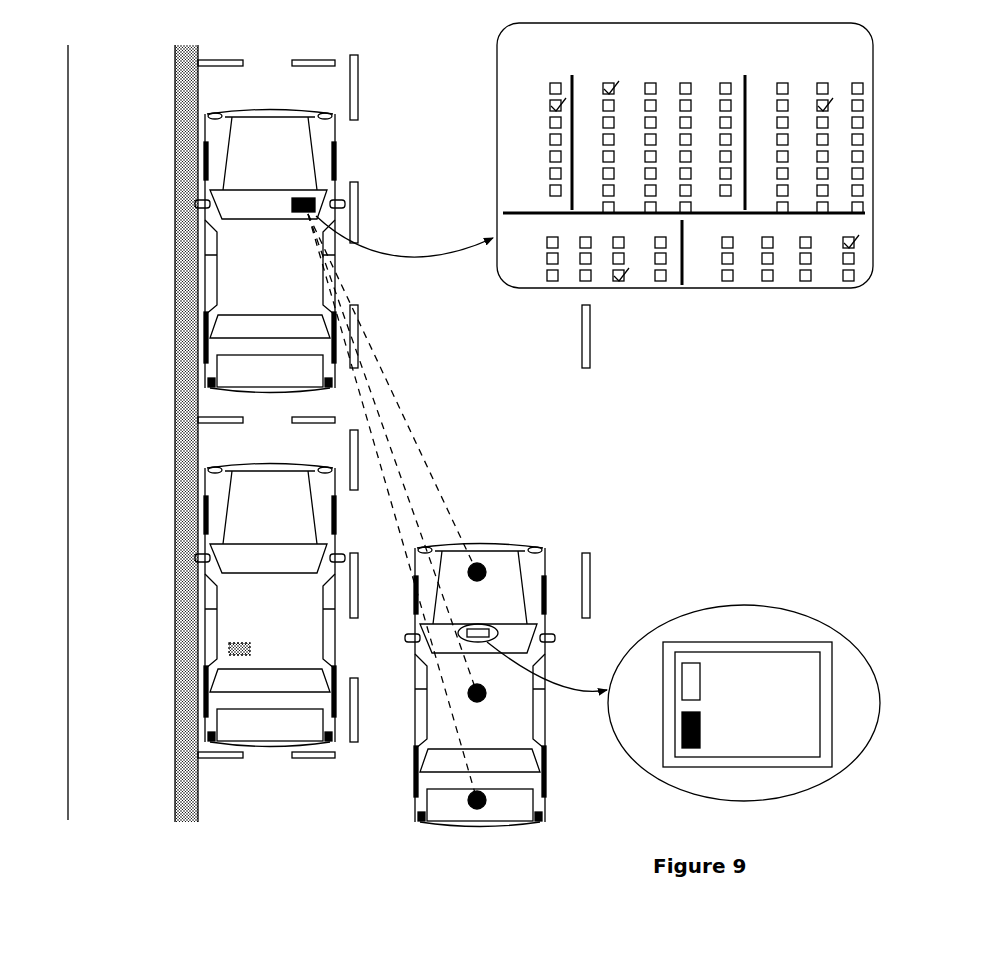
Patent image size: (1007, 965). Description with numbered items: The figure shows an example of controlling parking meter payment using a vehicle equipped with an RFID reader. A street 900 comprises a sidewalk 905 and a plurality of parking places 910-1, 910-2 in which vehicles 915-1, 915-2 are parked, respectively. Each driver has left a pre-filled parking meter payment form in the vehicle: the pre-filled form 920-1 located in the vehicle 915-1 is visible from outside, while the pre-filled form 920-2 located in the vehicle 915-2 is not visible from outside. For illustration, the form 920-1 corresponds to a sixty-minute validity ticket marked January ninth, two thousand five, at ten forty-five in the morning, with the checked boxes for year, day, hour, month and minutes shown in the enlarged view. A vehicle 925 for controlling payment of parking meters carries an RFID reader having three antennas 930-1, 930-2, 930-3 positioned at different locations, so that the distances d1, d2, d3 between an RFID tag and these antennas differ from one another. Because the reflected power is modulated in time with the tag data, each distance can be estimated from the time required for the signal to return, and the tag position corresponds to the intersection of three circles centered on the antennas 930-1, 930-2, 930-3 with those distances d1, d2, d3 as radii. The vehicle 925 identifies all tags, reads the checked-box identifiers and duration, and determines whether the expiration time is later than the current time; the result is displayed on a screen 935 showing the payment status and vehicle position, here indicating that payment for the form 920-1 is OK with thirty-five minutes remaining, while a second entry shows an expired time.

The street 900 is at (564, 450).
The sidewalk 905 is at (97, 245).
The parking place 910-1 is at (257, 92).
The parking place 910-2 is at (263, 444).
The vehicle 915-1 is at (210, 296).
The vehicle 915-2 is at (212, 700).
The pre-filled form 920-1 is at (292, 205).
The pre-filled form 920-2 is at (280, 632).
The vehicle for controlling payment of parking meters 925 is at (415, 703).
The antenna 930-1 is at (481, 582).
The antenna 930-2 is at (481, 703).
The antenna 930-3 is at (472, 807).
The screen 935 is at (857, 712).
The distance to first sensor d1 is at (392, 393).
The distance to second sensor d2 is at (392, 453).
The distance to third sensor d3 is at (392, 507).